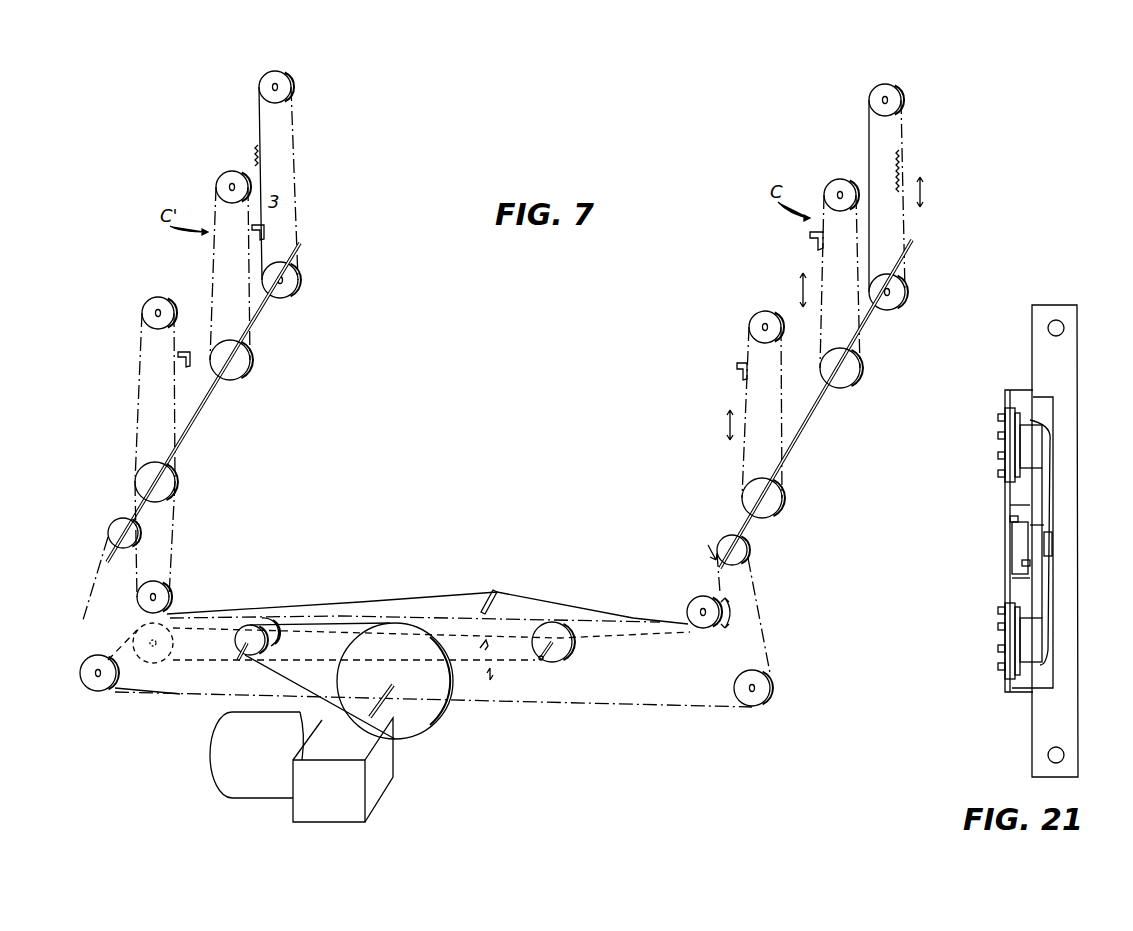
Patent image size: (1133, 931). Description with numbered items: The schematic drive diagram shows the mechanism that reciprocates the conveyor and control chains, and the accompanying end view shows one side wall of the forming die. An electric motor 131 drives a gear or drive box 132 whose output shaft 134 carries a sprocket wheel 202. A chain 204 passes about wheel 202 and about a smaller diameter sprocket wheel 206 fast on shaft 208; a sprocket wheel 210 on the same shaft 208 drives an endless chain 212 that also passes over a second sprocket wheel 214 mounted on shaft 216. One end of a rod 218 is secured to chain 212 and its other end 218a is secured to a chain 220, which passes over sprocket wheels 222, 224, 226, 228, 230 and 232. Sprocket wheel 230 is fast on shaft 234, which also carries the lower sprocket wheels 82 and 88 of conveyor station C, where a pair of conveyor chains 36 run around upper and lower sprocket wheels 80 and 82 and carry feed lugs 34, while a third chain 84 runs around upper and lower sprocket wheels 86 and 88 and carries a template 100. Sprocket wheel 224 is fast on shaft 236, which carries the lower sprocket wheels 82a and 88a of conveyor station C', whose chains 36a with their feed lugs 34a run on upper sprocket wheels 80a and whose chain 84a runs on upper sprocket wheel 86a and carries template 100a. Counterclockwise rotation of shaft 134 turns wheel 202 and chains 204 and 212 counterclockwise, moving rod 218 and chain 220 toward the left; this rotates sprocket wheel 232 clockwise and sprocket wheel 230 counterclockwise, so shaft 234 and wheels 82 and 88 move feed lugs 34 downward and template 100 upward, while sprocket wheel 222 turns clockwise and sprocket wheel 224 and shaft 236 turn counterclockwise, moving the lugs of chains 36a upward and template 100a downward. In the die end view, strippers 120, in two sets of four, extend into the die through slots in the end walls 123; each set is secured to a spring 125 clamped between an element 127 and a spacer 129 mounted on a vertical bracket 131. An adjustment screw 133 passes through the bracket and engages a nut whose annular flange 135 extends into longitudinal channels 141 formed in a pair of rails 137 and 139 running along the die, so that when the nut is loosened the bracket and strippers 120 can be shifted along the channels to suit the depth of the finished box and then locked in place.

In FIG. 7, the upper pulley 86a is at (282, 78).
In FIG. 7, the chain 84a is at (296, 140).
In FIG. 7, the template 100a is at (256, 150).
In FIG. 7, the pulley 80a is at (222, 176).
In FIG. 7, the conveyor chains 36a is at (214, 280).
In FIG. 7, the bracket 34a is at (266, 232).
In FIG. 7, the lower sprocket wheel 88a is at (292, 291).
In FIG. 7, the shaft 236 is at (140, 512).
In FIG. 7, the lower sprocket wheel 82a is at (250, 368).
In FIG. 7, the sprocket wheel 224 is at (115, 528).
In FIG. 7, the sprocket wheel 222 is at (168, 600).
In FIG. 7, the sprocket wheel 226 is at (94, 690).
In FIG. 7, the smaller diameter sprocket wheel 206 is at (252, 626).
In FIG. 7, the sprocket wheel 210 is at (276, 630).
In FIG. 7, the shaft 208 is at (238, 658).
In FIG. 7, the endless chain 212 is at (385, 610).
In FIG. 7, the rod 218 is at (492, 590).
In FIG. 7, the tensioner arm 218a is at (482, 652).
In FIG. 7, the chain 220 is at (558, 585).
In FIG. 7, the chain 204 is at (250, 690).
In FIG. 7, the second sprocket wheel 214 is at (556, 632).
In FIG. 7, the shaft 216 is at (546, 662).
In FIG. 7, the sprocket wheel 202 is at (433, 712).
In FIG. 7, the output shaft 134 is at (376, 700).
In FIG. 7, the electric motor 131 is at (236, 790).
In FIG. 21, the electric motor 131 is at (1040, 522).
In FIG. 7, the gear or drive box 132 is at (372, 793).
In FIG. 7, the upper sprocket wheel 86 is at (888, 88).
In FIG. 7, the third vertically reciprocating chain 84 is at (866, 122).
In FIG. 7, the template 100 is at (904, 175).
In FIG. 7, the upper sprocket wheels 80 is at (833, 180).
In FIG. 7, the conveyor chains 36 is at (785, 360).
In FIG. 7, the feed lugs 34 is at (823, 252).
In FIG. 7, the lower sprocket wheel 88 is at (902, 292).
In FIG. 7, the shaft 234 is at (748, 530).
In FIG. 7, the lower sprocket wheels 82 is at (858, 382).
In FIG. 7, the sprocket wheel 230 is at (746, 565).
In FIG. 7, the sprocket wheel 232 is at (708, 630).
In FIG. 7, the sprocket wheel 228 is at (752, 706).
In FIG. 21, the end walls 123 is at (1008, 695).
In FIG. 21, the spacer 129 is at (1030, 455).
In FIG. 21, the spring 125 is at (1021, 445).
In FIG. 21, the element 127 is at (1010, 440).
In FIG. 21, the strippers 120 is at (997, 436).
In FIG. 21, the rail 137 is at (1018, 508).
In FIG. 21, the longitudinal channels 141 is at (1012, 518).
In FIG. 21, the adjustment screw 133 is at (1015, 545).
In FIG. 21, the annular flange 135 is at (1032, 527).
In FIG. 21, the rail 139 is at (1025, 579).